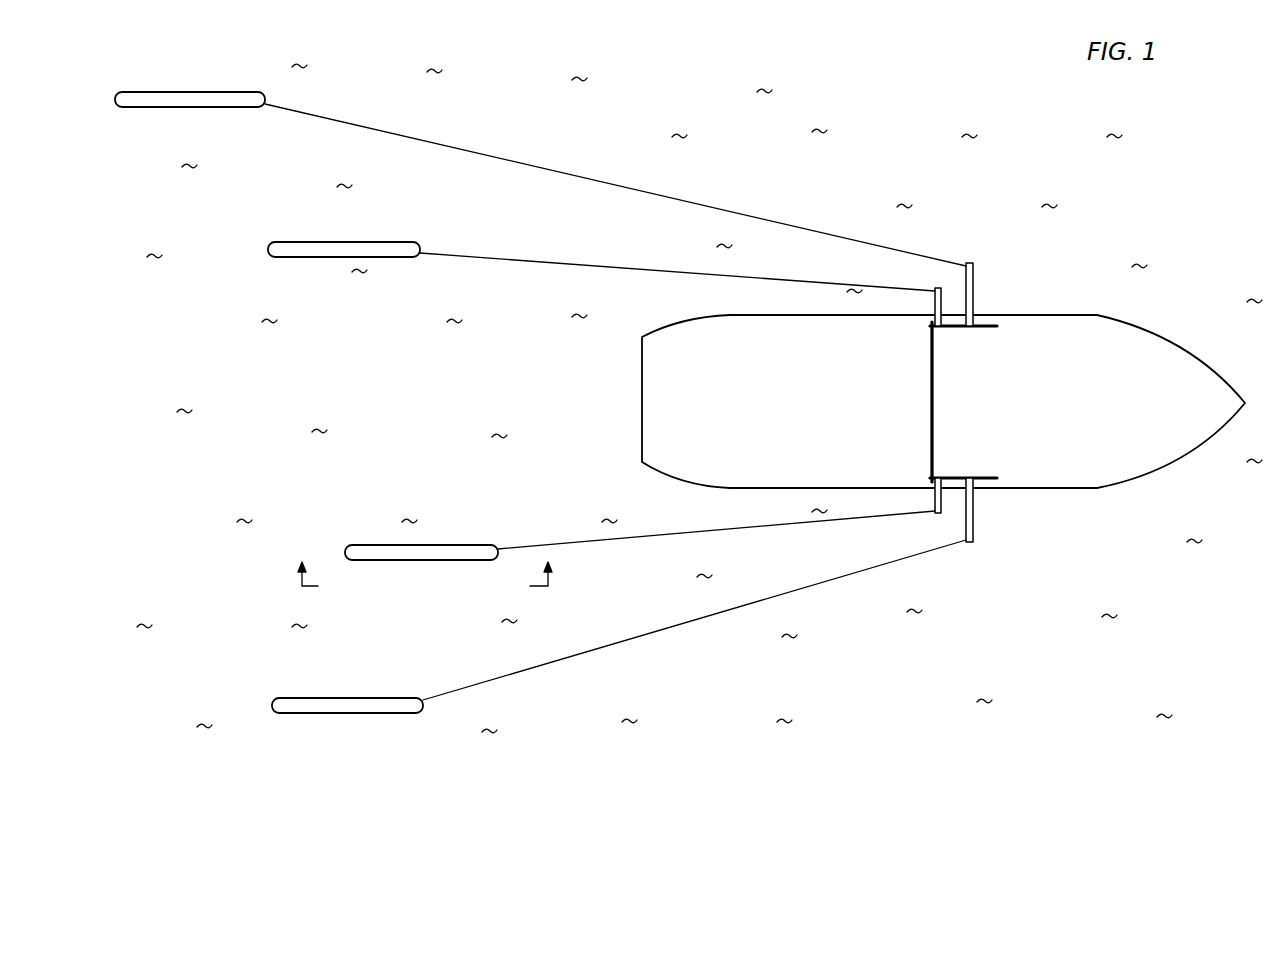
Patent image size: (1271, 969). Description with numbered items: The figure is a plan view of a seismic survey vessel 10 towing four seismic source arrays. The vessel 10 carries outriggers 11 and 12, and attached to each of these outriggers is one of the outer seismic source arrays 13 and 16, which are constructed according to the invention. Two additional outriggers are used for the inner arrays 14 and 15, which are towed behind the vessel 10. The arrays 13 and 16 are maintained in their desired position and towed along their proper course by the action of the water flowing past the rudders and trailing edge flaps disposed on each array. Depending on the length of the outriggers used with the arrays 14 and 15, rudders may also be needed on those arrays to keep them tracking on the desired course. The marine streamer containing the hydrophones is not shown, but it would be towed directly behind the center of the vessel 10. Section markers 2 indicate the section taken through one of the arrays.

The seismic survey vessel 10 is at (1062, 413).
The outrigger 11 is at (974, 287).
The outrigger 12 is at (974, 522).
The seismic source array 13 is at (365, 698).
The seismic source array 14 is at (458, 545).
The seismic source array 15 is at (332, 242).
The seismic source array 16 is at (195, 92).
The section line 2- 2 is at (419, 565).